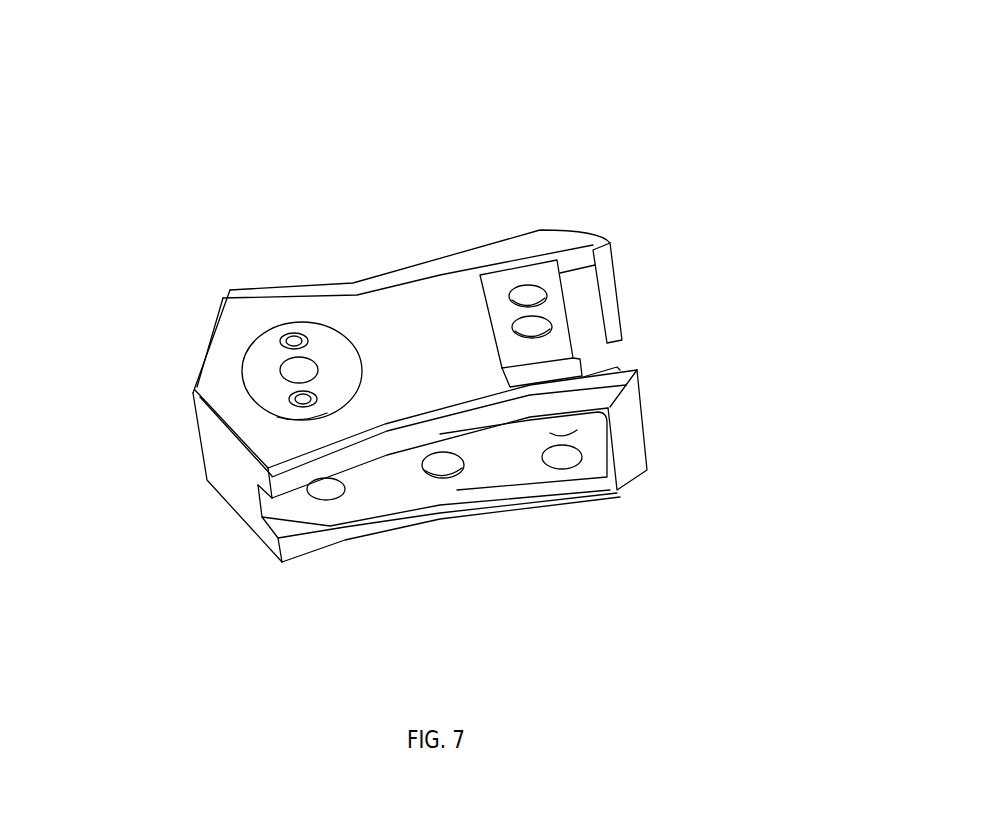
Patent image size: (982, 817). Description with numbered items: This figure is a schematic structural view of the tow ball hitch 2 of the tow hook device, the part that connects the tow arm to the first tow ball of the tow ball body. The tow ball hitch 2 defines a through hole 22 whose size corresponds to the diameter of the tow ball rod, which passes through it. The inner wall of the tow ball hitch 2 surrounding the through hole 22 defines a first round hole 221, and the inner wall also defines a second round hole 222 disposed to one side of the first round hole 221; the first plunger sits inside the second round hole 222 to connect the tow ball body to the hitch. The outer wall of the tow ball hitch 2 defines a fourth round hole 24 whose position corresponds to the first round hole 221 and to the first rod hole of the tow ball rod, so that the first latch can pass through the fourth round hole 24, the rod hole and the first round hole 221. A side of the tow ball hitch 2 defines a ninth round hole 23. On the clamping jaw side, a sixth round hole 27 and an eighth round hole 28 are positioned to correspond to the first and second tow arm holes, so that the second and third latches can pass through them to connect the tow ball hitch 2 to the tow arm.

The tow ball hitch 2 is at (457, 372).
The through hole 22 is at (276, 380).
The first round hole 221 is at (296, 372).
The second round hole 222 is at (290, 335).
The ninth round hole 23 is at (443, 477).
The fourth round hole 24 is at (325, 500).
The sixth round hole 27 is at (524, 290).
The eighth round hole 28 is at (543, 330).